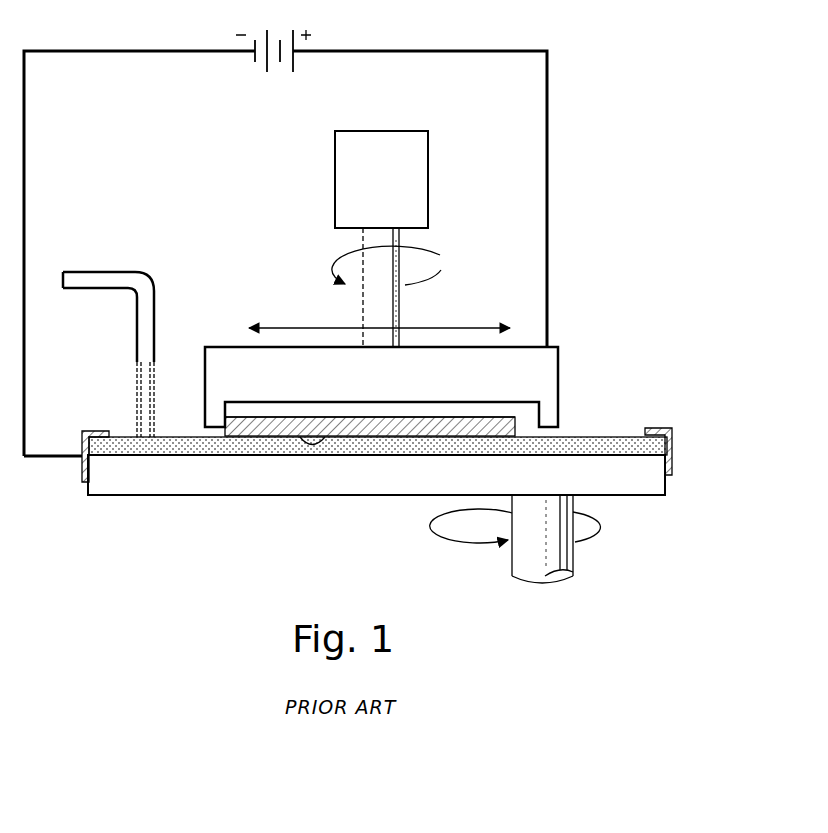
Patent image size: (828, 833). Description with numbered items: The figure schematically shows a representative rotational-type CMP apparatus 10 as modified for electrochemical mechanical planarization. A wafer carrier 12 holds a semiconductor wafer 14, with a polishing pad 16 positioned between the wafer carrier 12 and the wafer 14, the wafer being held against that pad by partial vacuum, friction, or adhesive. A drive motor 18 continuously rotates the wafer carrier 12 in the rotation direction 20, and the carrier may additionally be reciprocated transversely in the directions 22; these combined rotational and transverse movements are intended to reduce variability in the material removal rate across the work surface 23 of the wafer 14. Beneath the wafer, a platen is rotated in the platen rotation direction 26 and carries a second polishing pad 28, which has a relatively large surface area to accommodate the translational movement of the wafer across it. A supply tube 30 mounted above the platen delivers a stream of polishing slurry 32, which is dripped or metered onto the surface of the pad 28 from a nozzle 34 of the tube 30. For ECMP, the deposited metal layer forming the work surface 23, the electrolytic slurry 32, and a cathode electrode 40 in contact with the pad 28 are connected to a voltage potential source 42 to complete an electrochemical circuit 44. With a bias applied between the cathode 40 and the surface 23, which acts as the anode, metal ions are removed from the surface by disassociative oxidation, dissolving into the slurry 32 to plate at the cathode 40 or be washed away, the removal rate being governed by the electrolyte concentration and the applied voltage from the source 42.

The CMP apparatus 10 is at (609, 195).
The wafer carrier 12 is at (197, 358).
The semiconductor wafer 14 is at (412, 417).
The polishing pad 16 is at (462, 417).
The drive motor 18 is at (428, 195).
The rotation direction 20 is at (440, 265).
The transverse reciprocation directions 22 is at (285, 328).
The work surface 23 is at (320, 437).
The platen rotation direction 26 is at (578, 540).
The polishing pad 28 is at (612, 437).
The supply tube 30 is at (93, 272).
The polishing slurry 32 is at (137, 392).
The nozzle 34 is at (155, 378).
The cathode electrode 40 is at (670, 448).
The voltage potential source 42 is at (293, 72).
The electrochemical circuit 44 is at (142, 127).